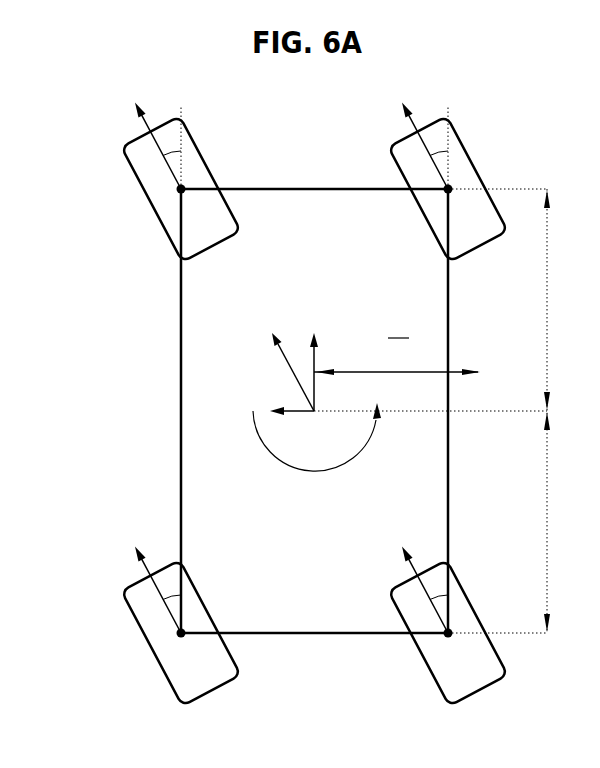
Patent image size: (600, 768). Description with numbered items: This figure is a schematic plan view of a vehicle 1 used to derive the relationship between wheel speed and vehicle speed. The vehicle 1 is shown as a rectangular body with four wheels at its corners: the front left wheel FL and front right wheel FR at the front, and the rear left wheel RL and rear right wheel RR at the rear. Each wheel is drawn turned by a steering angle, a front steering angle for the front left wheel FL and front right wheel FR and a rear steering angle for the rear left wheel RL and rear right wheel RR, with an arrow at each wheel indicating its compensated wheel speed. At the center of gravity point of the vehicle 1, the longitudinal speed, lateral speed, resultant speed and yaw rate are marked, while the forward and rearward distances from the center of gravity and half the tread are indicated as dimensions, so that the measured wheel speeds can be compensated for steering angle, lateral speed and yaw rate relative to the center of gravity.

The vehicle 1 is at (308, 406).
The front left wheel FL is at (155, 174).
The front right wheel FR is at (424, 174).
The rear left wheel RL is at (146, 628).
The rear right wheel RR is at (413, 628).